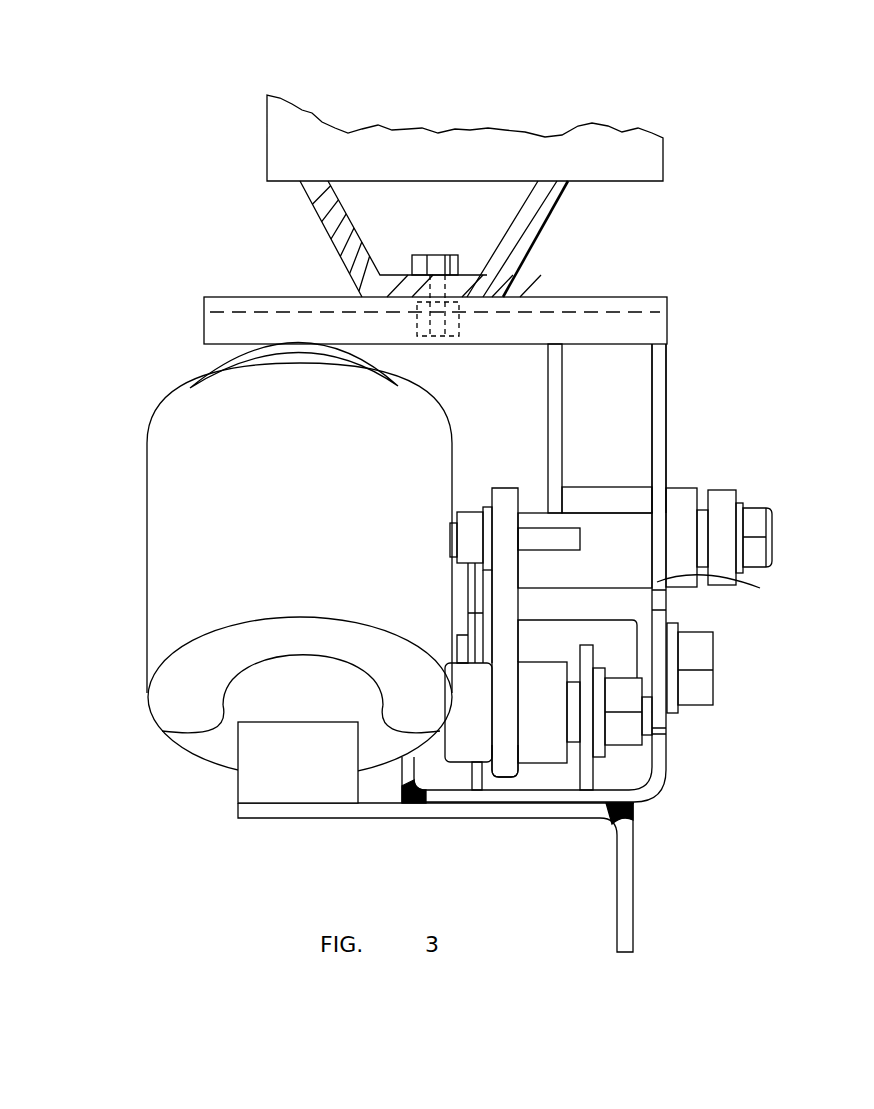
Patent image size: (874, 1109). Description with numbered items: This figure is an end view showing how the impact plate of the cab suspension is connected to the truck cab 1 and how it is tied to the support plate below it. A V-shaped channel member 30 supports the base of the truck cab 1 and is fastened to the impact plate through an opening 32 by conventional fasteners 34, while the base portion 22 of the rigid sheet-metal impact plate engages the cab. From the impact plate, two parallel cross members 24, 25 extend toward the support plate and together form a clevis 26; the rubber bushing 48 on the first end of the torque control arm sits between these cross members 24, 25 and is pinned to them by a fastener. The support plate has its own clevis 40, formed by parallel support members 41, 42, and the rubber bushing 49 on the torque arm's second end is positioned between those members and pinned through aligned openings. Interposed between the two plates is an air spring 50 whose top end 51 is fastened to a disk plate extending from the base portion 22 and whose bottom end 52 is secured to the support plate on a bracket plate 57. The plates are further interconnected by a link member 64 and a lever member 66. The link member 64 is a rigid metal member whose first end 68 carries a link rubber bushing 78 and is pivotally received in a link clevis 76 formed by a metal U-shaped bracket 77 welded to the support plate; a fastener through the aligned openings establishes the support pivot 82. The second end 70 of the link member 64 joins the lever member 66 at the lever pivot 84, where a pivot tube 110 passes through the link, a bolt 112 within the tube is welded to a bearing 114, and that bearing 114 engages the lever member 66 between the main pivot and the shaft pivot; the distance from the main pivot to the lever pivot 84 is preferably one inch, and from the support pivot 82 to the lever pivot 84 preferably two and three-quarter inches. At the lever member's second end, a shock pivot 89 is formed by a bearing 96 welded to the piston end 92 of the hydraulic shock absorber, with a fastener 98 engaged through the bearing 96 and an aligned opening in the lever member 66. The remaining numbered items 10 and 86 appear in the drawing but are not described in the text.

The truck cab 1 is at (663, 155).
The mounting assembly 10 is at (484, 292).
The base portion 22 is at (668, 300).
The cross member 24 is at (660, 375).
The cross member 25 is at (553, 395).
The clevis 26 is at (670, 410).
The V-shaped channel member 30 is at (545, 232).
The opening 32 is at (470, 291).
The fasteners 34 is at (412, 267).
The clevis 40 is at (669, 733).
The support member 41 is at (670, 789).
The support member 42 is at (470, 783).
The rubber bushing 48 is at (617, 640).
The rubber bushing 49 is at (618, 613).
The air spring 50 is at (170, 612).
The top end 51 is at (185, 360).
The bottom end 52 is at (274, 749).
The bracket plate 57 is at (248, 790).
The link member 64 is at (512, 767).
The lever member 66 is at (676, 497).
The first end 68 is at (502, 778).
The second end 70 is at (489, 476).
The link clevis 76 is at (605, 774).
The U-shaped bracket 77 is at (590, 782).
The link rubber bushing 78 is at (537, 673).
The support pivot 82 is at (647, 728).
The lever pivot 84 is at (445, 533).
The cross bar 86 is at (596, 497).
The shock pivot 89 is at (780, 530).
The first end 92 is at (750, 480).
The bearing 96 is at (727, 555).
The fastener 98 is at (765, 512).
The pivot tube 110 is at (455, 565).
The fastener 112 is at (455, 558).
The bearing 114 is at (760, 588).